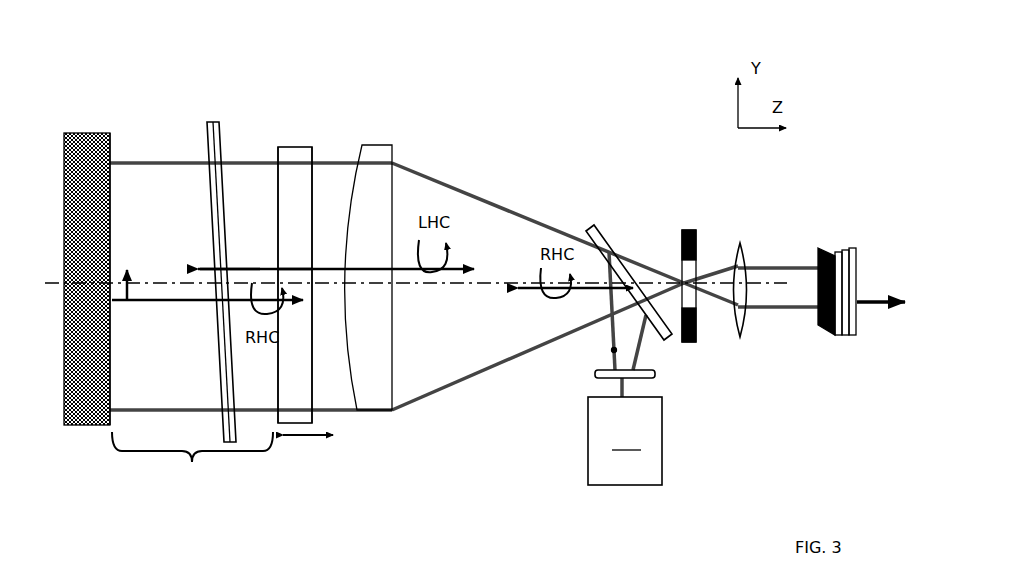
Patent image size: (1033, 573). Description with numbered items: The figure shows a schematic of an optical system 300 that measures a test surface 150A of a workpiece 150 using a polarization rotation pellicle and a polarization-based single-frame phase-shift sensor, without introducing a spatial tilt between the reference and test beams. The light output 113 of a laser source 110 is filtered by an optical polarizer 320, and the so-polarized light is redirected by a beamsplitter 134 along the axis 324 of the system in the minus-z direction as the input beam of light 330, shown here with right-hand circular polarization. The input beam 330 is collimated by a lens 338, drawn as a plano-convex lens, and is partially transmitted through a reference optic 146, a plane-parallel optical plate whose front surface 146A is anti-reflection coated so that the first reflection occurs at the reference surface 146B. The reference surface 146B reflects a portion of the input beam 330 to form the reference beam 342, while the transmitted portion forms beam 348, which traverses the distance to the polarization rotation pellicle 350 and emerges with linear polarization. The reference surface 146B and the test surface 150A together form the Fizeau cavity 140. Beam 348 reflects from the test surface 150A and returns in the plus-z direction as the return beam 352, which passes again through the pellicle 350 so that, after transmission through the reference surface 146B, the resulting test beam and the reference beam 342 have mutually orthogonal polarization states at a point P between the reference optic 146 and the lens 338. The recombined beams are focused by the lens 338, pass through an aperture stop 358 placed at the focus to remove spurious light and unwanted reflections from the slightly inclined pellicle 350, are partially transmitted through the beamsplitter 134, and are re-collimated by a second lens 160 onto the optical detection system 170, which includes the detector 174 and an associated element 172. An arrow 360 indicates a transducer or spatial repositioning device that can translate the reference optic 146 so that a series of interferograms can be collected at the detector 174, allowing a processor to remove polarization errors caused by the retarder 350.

The optical system 300 is at (571, 50).
The laser source 110 is at (625, 441).
The light output 113 is at (611, 352).
The optical polarizer 320 is at (657, 378).
The beamsplitter 134 is at (598, 227).
The input beam of light 330 is at (537, 293).
The aperture stop 358 is at (687, 228).
The second lens 160 is at (738, 243).
The optical detection system 170 is at (848, 314).
The detector plate 172 is at (840, 337).
The detector 174 is at (847, 337).
The lens 338 is at (388, 145).
The reference optic 146 is at (292, 147).
The front surface 146A is at (316, 154).
The reference surface 146B is at (282, 147).
The polarization rotation pellicle 350 is at (213, 116).
The workpiece 150 is at (104, 130).
The test surface 150A is at (114, 147).
The Fizeau cavity 140 is at (192, 467).
The transducer/spatial repositioning device 360 is at (313, 447).
The reference beam 342 is at (297, 262).
The beam 348 is at (205, 257).
The return beam 352 is at (207, 266).
The axis 324 is at (466, 288).